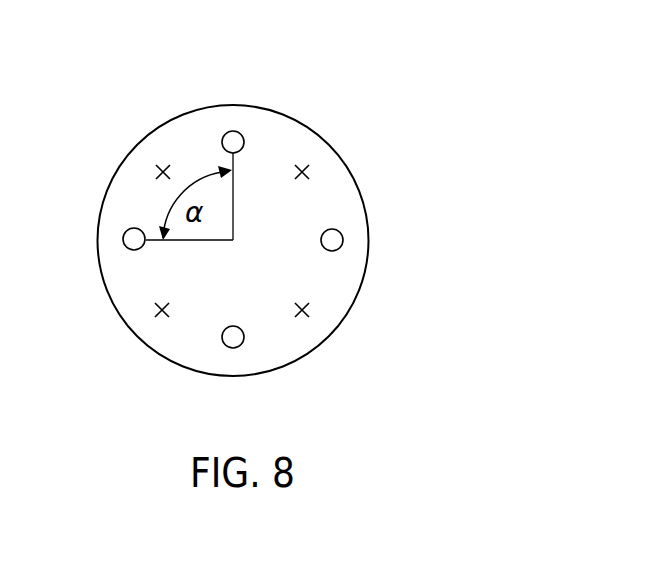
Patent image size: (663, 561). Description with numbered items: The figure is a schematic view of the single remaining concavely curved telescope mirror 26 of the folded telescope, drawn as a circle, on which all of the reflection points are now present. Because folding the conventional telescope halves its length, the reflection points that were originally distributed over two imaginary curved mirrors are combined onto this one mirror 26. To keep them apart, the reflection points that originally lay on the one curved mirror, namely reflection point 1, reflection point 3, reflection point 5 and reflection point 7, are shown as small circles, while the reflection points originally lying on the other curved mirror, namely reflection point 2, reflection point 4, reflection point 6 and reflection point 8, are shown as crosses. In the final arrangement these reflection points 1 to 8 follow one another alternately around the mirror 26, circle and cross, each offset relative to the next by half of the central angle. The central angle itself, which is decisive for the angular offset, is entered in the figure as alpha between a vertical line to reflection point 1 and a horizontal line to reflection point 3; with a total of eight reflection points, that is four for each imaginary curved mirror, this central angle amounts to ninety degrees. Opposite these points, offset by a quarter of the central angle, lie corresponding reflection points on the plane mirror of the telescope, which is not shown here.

The concavely curved mirror 26 is at (296, 118).
The reflection point 1 is at (234, 131).
The reflection point 2 is at (162, 172).
The reflection point 3 is at (123, 239).
The reflection point 4 is at (162, 310).
The reflection point 5 is at (236, 349).
The reflection point 6 is at (306, 310).
The reflection point 7 is at (344, 240).
The reflection point 8 is at (305, 171).